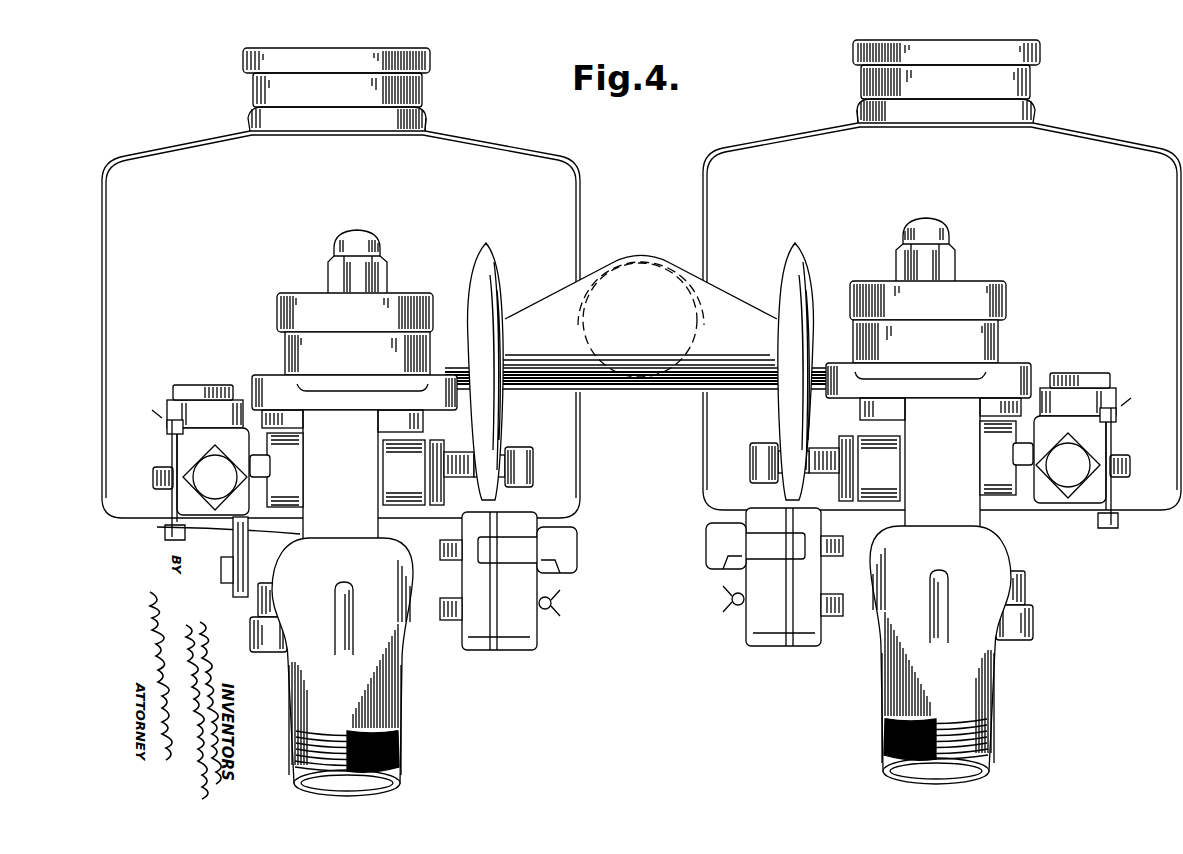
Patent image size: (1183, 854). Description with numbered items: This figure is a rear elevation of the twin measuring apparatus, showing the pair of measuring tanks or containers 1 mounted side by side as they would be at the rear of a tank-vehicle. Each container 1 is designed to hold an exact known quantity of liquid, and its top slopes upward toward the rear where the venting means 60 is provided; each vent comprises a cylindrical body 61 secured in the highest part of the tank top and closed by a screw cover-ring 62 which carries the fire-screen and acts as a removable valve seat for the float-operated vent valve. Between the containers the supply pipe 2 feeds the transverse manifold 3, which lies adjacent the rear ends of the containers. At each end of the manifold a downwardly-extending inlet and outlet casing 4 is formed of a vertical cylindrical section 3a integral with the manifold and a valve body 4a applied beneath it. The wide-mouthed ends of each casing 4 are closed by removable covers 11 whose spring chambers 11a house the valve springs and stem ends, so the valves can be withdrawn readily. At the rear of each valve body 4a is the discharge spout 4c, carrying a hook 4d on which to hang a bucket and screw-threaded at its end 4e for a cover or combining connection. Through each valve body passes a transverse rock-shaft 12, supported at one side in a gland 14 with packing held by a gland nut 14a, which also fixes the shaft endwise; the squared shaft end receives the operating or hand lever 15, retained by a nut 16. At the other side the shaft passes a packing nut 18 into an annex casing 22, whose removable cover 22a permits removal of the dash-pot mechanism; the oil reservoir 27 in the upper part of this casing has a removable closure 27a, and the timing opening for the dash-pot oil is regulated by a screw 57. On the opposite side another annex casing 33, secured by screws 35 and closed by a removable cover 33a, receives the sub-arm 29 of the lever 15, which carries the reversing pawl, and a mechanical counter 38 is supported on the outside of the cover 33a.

The measuring tank or container 1 is at (487, 152).
The pipe 2 is at (700, 311).
The transverse manifold 3 is at (592, 387).
The cylindrical section 3a is at (288, 355).
The inlet and outlet casing 4 is at (379, 518).
The valve body 4a is at (342, 412).
The discharge spout 4c is at (392, 718).
The hook 4d is at (336, 612).
The screw-threaded end 4e is at (395, 758).
The removable cover 11 is at (308, 300).
The spring chamber 11a is at (386, 295).
The rock-shaft 12 is at (455, 456).
The gland 14 is at (405, 465).
The gland nut 14a is at (432, 505).
The operating or hand lever 15 is at (492, 262).
The nut 16 is at (515, 462).
The packing nut 18 is at (292, 456).
The annex casing 22 is at (190, 502).
The removable cover 22a is at (172, 456).
The oil reservoir 27 is at (224, 580).
The removable closure 27a is at (188, 392).
The sub-arm 29 is at (505, 513).
The annex casing 33 is at (470, 632).
The removable cover 33a is at (540, 612).
The screw 35 is at (442, 562).
The mechanical counter 38 is at (570, 536).
The screw 57 is at (152, 474).
The venting means 60 is at (425, 98).
The cylindrical body 61 is at (255, 92).
The screw cover-ring 62 is at (245, 62).